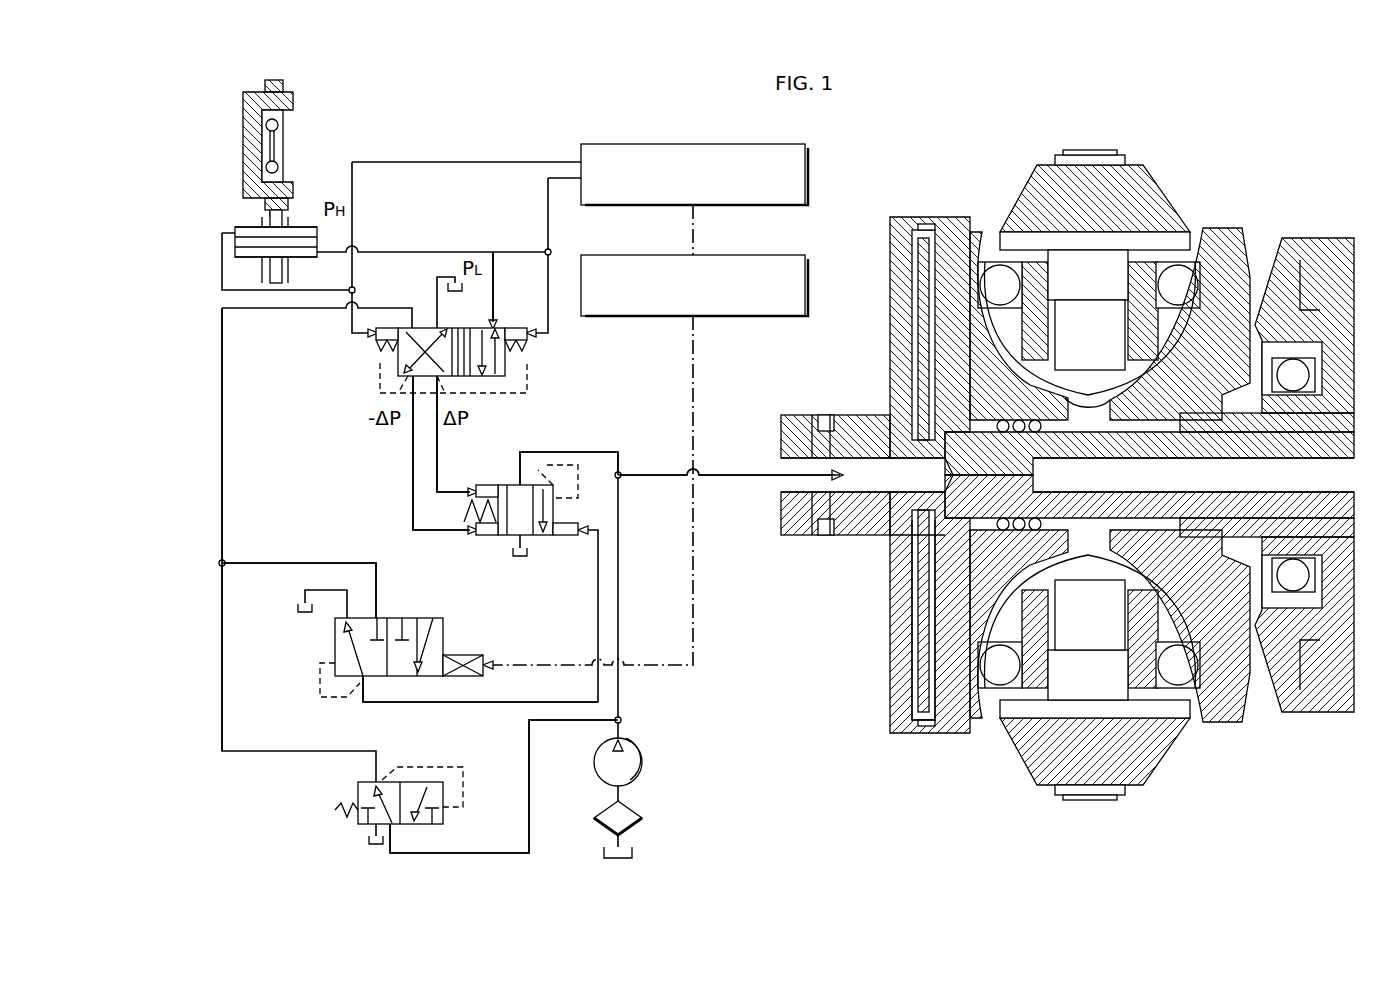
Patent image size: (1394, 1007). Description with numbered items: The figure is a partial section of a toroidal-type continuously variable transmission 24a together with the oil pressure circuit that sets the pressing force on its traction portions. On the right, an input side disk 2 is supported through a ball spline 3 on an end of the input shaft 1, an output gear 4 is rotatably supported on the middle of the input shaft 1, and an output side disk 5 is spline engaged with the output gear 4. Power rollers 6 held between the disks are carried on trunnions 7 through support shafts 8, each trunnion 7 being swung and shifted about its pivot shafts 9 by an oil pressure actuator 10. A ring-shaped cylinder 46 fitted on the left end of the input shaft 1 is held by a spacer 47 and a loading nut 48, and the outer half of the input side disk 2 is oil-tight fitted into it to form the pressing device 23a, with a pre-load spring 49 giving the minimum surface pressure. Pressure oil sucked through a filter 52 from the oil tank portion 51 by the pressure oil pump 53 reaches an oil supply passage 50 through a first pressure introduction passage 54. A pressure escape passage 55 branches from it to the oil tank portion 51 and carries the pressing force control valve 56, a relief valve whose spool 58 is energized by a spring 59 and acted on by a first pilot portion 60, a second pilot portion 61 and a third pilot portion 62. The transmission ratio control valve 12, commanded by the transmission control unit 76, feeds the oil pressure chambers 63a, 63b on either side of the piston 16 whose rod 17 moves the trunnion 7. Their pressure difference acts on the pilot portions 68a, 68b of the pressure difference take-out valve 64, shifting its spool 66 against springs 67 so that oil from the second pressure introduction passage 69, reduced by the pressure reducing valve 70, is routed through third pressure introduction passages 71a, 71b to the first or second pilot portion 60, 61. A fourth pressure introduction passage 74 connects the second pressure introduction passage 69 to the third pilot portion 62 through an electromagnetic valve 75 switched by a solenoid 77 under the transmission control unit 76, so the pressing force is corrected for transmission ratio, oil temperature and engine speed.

The input shaft 1 is at (1295, 450).
The input side disk 2 is at (968, 250).
The ball spline 3 is at (1040, 435).
The output gear 4 is at (1320, 290).
The output side disk 5 is at (1240, 245).
The power roller 6 is at (283, 133).
The trunnion 7 is at (243, 100).
The support shaft 8 is at (1088, 270).
The pivot shaft 9 is at (283, 84).
The actuator 10 is at (258, 219).
The transmission ratio control valve 12 is at (674, 143).
The piston 16 is at (317, 242).
The rod 17 is at (276, 283).
The pressing device 23a is at (924, 226).
The toroidal-type continuously variable transmission 24a is at (1228, 188).
The cylinder 46 is at (890, 288).
The spacer 47 is at (842, 535).
The loading nut 48 is at (795, 535).
The pre-load spring 49 is at (915, 658).
The oil supply passage 50 is at (912, 492).
The oil tank portion 51 is at (455, 282).
The filter 52 is at (630, 808).
The pressure oil pump 53 is at (642, 768).
The first pressure introduction passage 54 is at (702, 480).
The pressure escape passage 55 is at (602, 450).
The pressing force control valve 56 is at (510, 483).
The spool 58 is at (510, 535).
The spring 59 is at (463, 512).
The first pilot portion 60 is at (486, 484).
The second pilot portion 61 is at (485, 535).
The third pilot portion 62 is at (566, 536).
The oil pressure chamber 63a is at (255, 226).
The oil pressure chamber 63b is at (247, 257).
The pressure difference take-out valve 64 is at (493, 250).
The spool 66 is at (458, 348).
The spring 67 is at (530, 350).
The pilot portion 68a is at (388, 333).
The pilot portion 68b is at (516, 333).
The second pressure introduction passage 69 is at (222, 563).
The pressure reducing valve 70 is at (360, 780).
The third pressure introduction passage 71a is at (437, 460).
The third pressure introduction passage 71b is at (413, 492).
The fourth pressure introduction passage 74 is at (318, 563).
The electromagnetic valve 75 is at (424, 615).
The transmission control unit 76 is at (766, 317).
The solenoid 77 is at (478, 655).